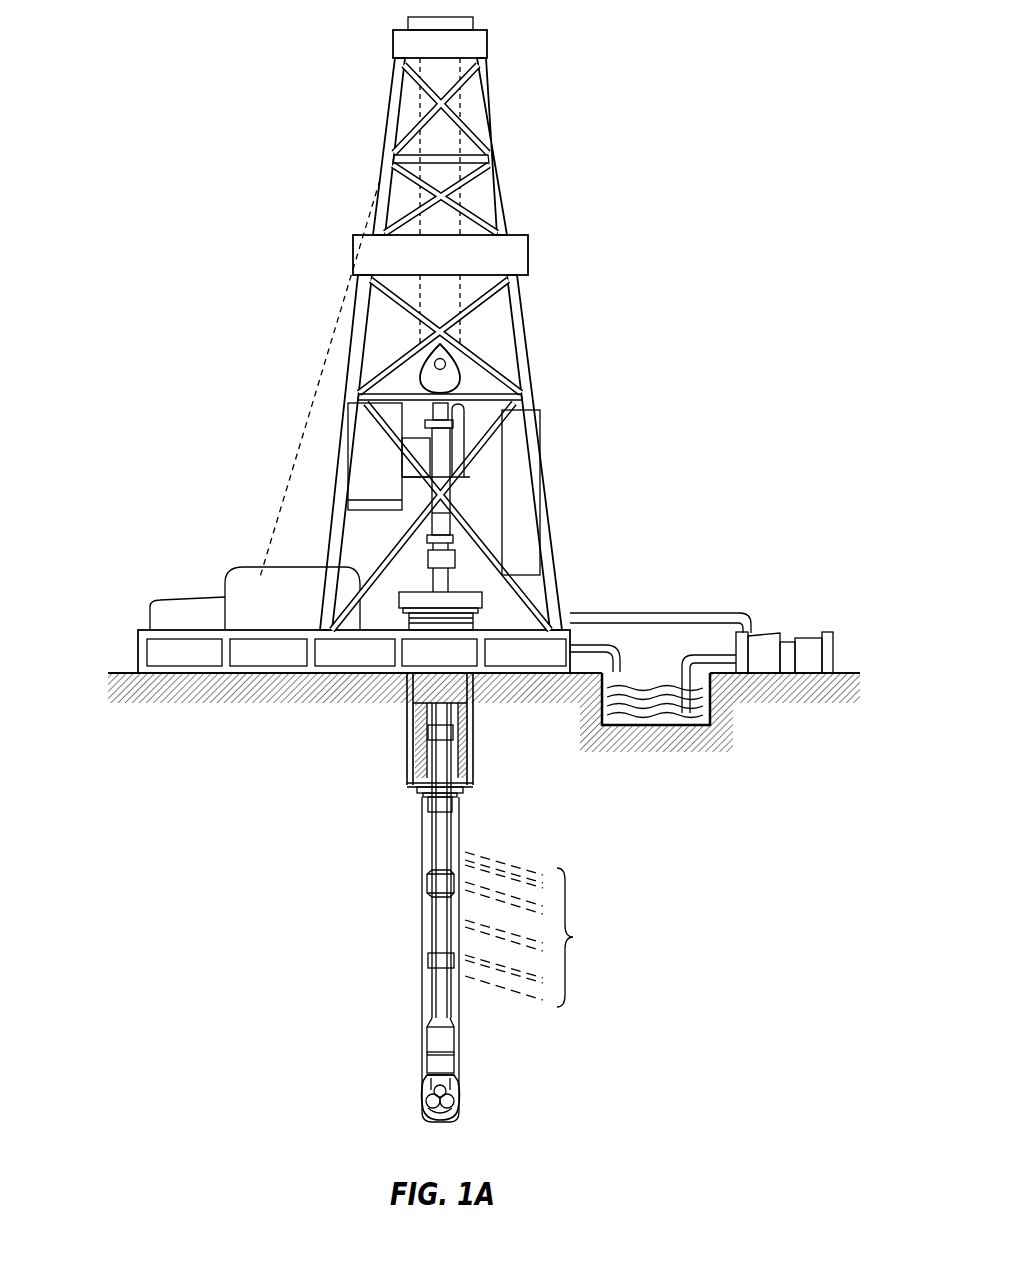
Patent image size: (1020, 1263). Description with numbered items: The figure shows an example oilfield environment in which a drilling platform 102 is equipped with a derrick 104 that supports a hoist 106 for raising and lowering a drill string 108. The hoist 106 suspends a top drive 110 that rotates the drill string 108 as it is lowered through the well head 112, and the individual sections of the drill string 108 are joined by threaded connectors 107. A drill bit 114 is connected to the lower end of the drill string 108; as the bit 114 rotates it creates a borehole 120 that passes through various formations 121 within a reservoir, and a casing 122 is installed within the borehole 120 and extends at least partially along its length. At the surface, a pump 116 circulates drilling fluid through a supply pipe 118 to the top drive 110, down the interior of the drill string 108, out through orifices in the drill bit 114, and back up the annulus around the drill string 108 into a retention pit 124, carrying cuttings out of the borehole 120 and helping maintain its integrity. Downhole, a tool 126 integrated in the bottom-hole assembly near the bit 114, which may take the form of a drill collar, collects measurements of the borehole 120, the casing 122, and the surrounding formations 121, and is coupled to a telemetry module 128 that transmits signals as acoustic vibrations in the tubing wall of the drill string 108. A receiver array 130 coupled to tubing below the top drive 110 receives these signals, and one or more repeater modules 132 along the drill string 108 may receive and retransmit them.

The drilling platform 102 is at (138, 655).
The derrick 104 is at (501, 173).
The hoist 106 is at (465, 370).
The threaded connectors 107 is at (428, 804).
The drill string 108 is at (445, 860).
The top drive 110 is at (442, 452).
The well head 112 is at (484, 600).
The drill bit 114 is at (455, 1097).
The pump 116 is at (766, 632).
The supply pipe 118 is at (683, 612).
The borehole 120 is at (422, 842).
The formations 121 is at (559, 929).
The casing 122 is at (405, 728).
The retention pit 124 is at (650, 712).
The tool 126 is at (427, 1067).
The telemetry module 128 is at (427, 1043).
The receiver array 130 is at (438, 538).
The repeater modules 132 is at (427, 884).